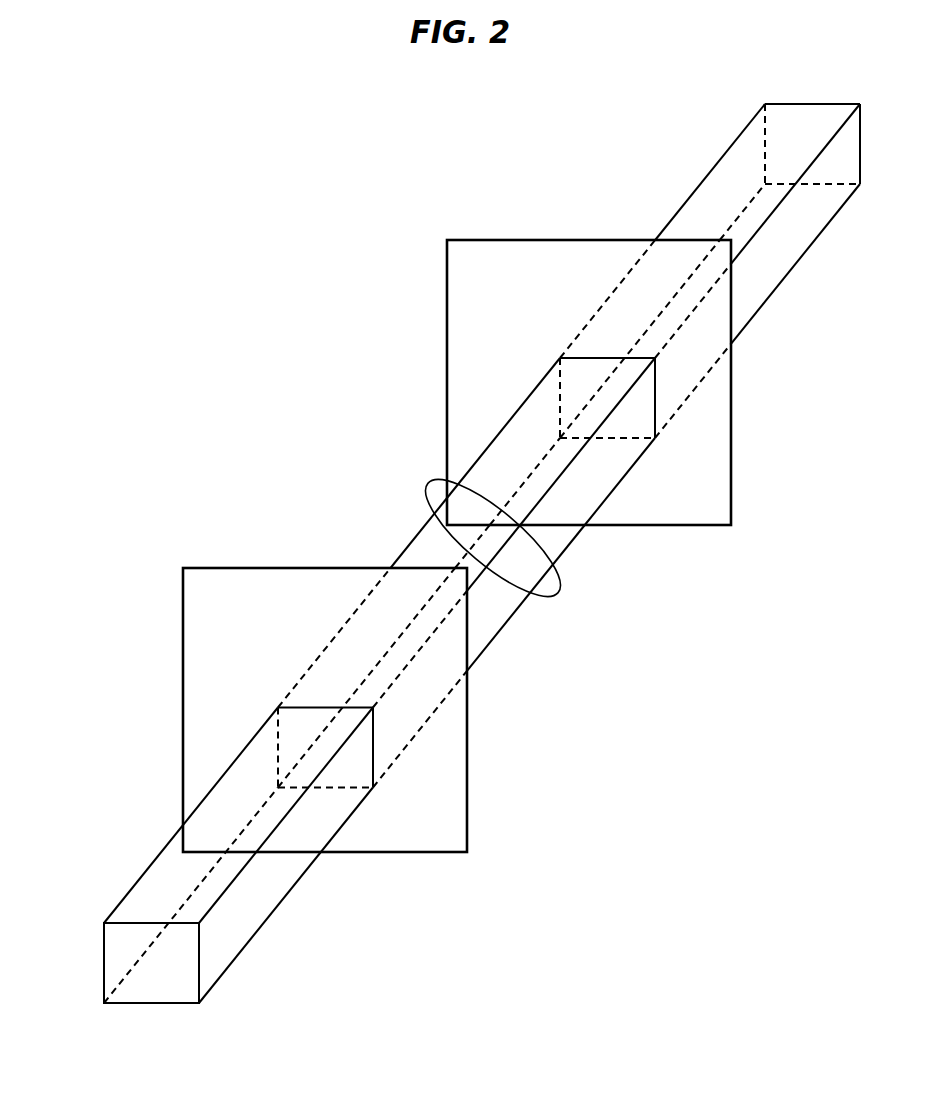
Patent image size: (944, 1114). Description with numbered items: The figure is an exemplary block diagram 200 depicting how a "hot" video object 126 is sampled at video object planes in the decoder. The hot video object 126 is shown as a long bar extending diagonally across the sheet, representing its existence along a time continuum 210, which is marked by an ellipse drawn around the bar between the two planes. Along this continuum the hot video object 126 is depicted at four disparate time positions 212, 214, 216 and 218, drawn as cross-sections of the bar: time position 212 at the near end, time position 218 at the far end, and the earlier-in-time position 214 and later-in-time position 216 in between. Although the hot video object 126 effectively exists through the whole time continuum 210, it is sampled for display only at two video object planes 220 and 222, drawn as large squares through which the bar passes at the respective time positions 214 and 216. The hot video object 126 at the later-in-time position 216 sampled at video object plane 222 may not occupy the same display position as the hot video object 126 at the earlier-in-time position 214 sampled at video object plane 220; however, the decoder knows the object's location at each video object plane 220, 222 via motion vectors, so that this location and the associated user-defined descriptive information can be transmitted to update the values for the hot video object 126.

The block diagram 200 is at (334, 181).
The hot video object 126 is at (148, 1004).
The time position 212 is at (104, 923).
The time position 218 is at (765, 104).
The earlier-in-time position 214 is at (278, 708).
The later-in-time position 216 is at (560, 358).
The video object plane 220 is at (183, 604).
The video object plane 222 is at (447, 275).
The time continuum 210 is at (557, 586).